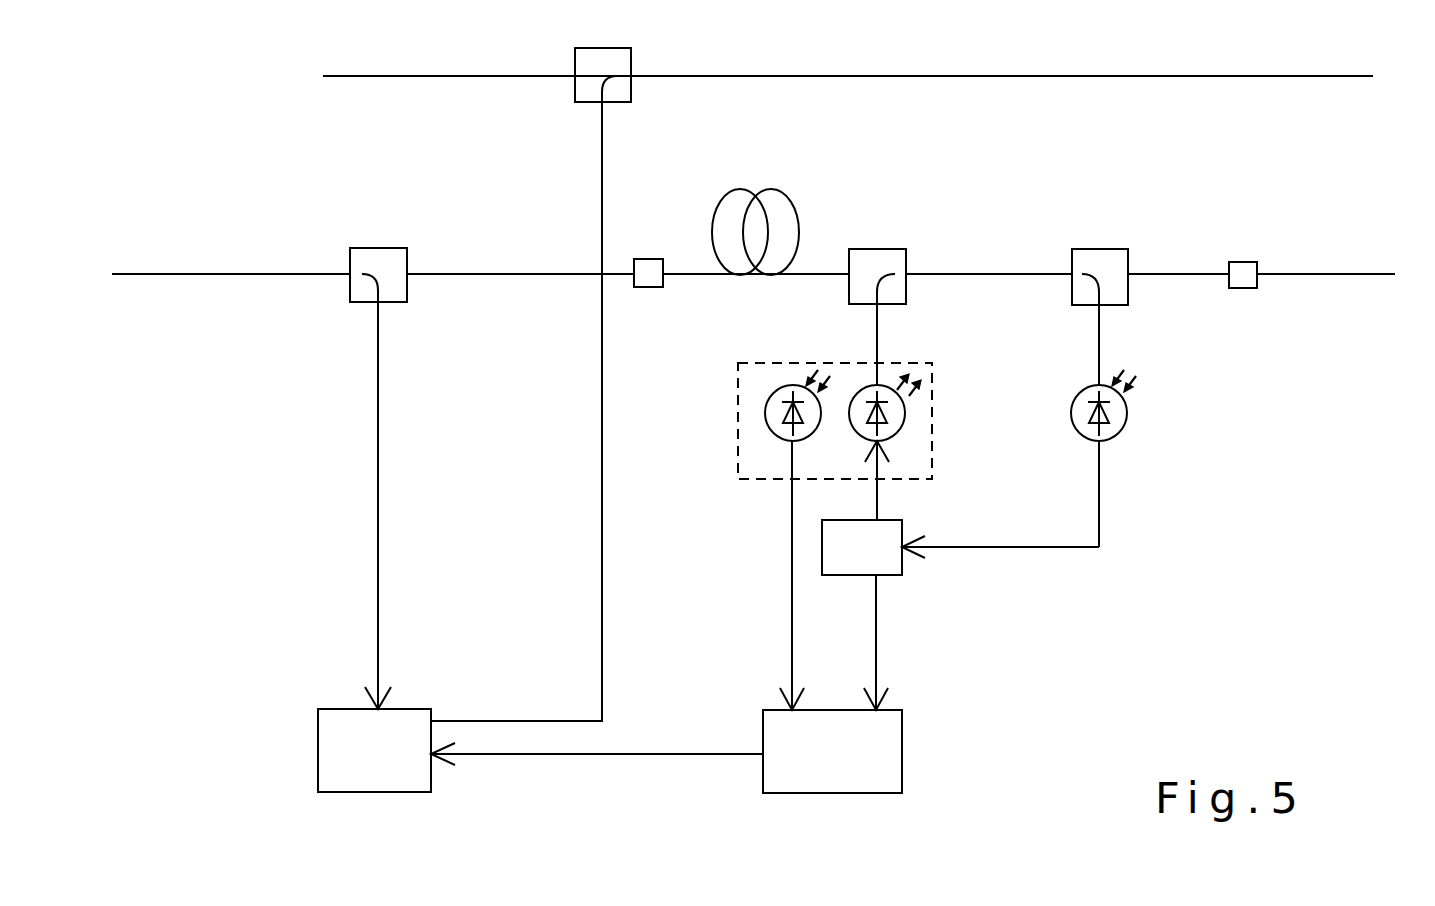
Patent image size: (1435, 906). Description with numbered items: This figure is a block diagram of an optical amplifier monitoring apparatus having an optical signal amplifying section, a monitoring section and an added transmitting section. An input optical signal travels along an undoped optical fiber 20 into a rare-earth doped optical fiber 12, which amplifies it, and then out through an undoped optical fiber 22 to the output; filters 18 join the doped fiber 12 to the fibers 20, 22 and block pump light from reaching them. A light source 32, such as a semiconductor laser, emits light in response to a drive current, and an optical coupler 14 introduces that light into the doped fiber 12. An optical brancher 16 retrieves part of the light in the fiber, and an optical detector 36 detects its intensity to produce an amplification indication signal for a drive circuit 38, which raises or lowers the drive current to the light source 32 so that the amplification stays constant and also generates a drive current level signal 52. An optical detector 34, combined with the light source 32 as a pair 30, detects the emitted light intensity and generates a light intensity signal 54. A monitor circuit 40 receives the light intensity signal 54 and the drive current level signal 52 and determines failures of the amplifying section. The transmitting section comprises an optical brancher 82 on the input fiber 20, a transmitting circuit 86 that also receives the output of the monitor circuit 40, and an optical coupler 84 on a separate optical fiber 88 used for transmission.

The optical fiber 12 is at (752, 190).
The optical coupler 14 is at (884, 249).
The optical brancher 16 is at (1105, 249).
The filters 18 is at (650, 259).
The optical fiber 20 is at (273, 273).
The optical fiber 22 is at (1303, 273).
The pair 30 is at (932, 402).
The light source 32 is at (894, 438).
The optical detector 34 is at (778, 440).
The optical detector 36 is at (1120, 432).
The drive circuit 38 is at (905, 565).
The monitor circuit 40 is at (763, 790).
The drive current level signal 52 is at (880, 640).
The light intensity signal 54 is at (787, 640).
The optical brancher 82 is at (385, 248).
The optical coupler 84 is at (632, 56).
The transmitting circuit 86 is at (407, 709).
The optical fiber 88 is at (975, 76).